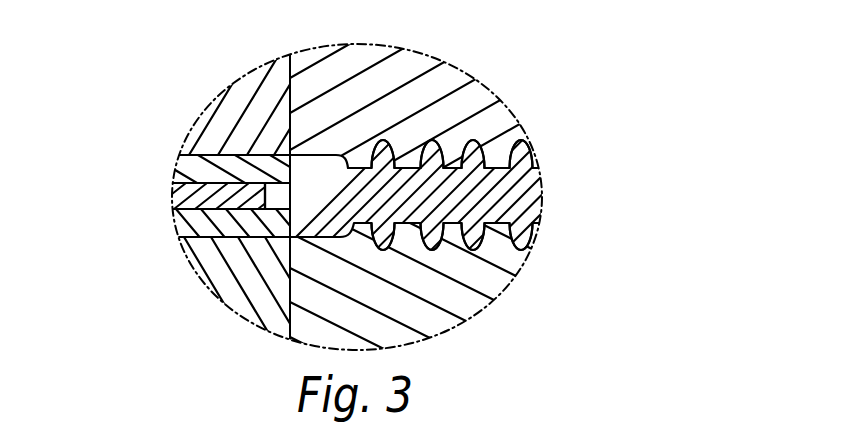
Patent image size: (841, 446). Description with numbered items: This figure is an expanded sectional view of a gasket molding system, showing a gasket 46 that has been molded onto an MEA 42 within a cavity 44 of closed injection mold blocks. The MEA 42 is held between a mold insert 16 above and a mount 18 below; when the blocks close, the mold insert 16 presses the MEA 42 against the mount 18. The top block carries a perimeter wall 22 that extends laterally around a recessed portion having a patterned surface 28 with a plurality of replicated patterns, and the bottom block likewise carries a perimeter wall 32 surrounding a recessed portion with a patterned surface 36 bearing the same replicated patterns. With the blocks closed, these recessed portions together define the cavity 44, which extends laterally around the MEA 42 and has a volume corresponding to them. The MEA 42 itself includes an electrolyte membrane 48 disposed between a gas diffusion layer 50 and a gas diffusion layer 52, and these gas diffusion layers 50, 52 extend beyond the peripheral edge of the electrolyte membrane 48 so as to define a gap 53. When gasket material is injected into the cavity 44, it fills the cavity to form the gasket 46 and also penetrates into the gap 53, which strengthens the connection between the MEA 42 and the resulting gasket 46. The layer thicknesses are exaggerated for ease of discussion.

The mold insert 16 is at (235, 98).
The mount 18 is at (235, 280).
The perimeter wall 22 is at (393, 62).
The patterned surface 28 is at (550, 150).
The perimeter wall 32 is at (453, 305).
The patterned surface 36 is at (553, 238).
The MEA 42 is at (119, 167).
The cavity 44 is at (558, 197).
The gasket 46 is at (450, 185).
The electrolyte membrane 48 is at (176, 197).
The gas diffusion layer 50 is at (192, 165).
The gas diffusion layer 52 is at (180, 223).
The gap 53 is at (292, 188).